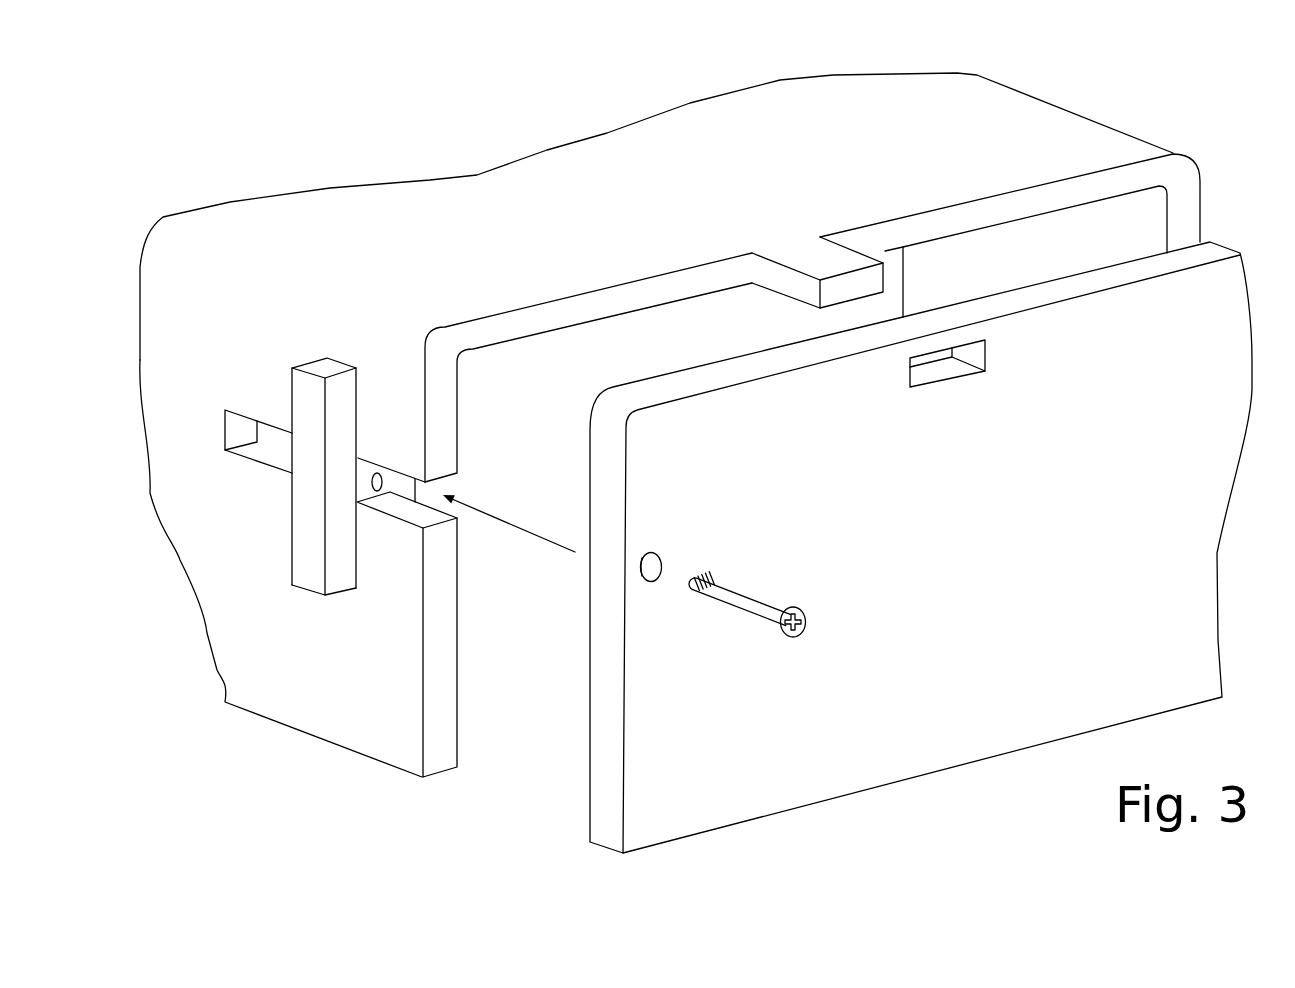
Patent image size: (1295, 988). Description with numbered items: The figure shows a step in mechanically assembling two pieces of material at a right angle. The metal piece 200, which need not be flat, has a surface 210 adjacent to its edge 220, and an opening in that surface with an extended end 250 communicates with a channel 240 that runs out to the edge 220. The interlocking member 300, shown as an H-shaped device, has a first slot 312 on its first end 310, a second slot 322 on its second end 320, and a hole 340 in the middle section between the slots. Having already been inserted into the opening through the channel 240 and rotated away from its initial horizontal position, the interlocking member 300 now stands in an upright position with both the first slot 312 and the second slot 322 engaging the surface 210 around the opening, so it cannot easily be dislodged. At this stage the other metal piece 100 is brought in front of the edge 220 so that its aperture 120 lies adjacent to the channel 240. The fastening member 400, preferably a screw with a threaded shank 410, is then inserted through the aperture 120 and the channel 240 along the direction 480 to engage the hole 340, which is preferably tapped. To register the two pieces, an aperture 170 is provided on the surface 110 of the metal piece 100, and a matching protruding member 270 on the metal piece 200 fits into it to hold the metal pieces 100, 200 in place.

The metal piece 100 is at (1193, 588).
The surface 110 is at (1001, 581).
The aperture 120 is at (650, 553).
The aperture 170 is at (960, 370).
The metal piece 200 is at (477, 185).
The surface 210 is at (241, 537).
The edge 220 is at (443, 418).
The channel 240 is at (457, 488).
The extended end 250 is at (264, 437).
The protruding member 270 is at (810, 253).
The interlocking member 300 is at (337, 474).
The first end 310 is at (358, 380).
The first slot 312 is at (358, 403).
The second end 320 is at (335, 567).
The second slot 322 is at (358, 533).
The hole 340 is at (382, 480).
The fastening member 400 is at (757, 587).
The threaded shank 410 is at (707, 578).
The direction 480 is at (517, 527).